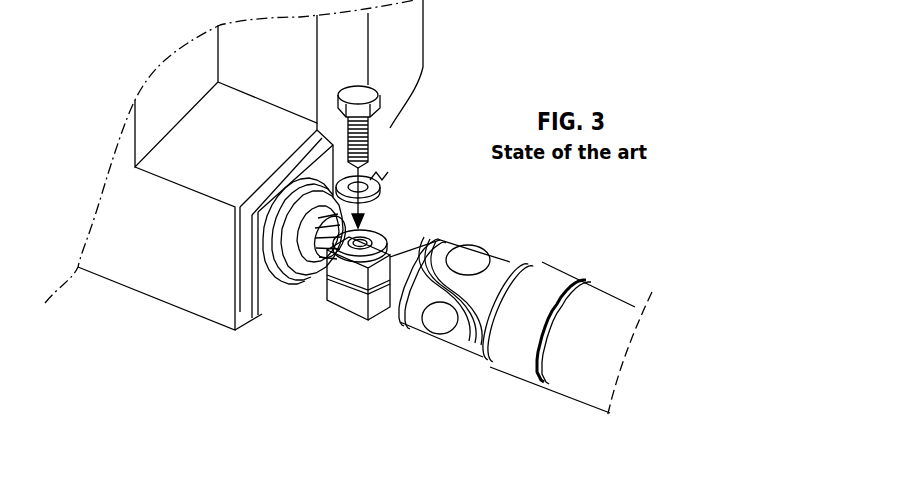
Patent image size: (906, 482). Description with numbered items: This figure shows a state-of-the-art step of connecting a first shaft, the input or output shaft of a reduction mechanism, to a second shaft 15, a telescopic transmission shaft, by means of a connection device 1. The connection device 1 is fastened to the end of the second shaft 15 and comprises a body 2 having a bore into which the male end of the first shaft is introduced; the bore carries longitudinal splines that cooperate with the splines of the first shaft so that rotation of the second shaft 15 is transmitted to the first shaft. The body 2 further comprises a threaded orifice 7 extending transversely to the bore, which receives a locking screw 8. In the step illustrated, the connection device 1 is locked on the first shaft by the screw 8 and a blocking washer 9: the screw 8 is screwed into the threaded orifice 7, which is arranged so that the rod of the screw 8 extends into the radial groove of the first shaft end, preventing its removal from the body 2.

The connection device 1 is at (485, 235).
The body 2 is at (318, 287).
The threaded orifice 7 is at (362, 243).
The screw 8 is at (362, 128).
The blocking washer 9 is at (377, 186).
The second shaft 15 is at (577, 378).